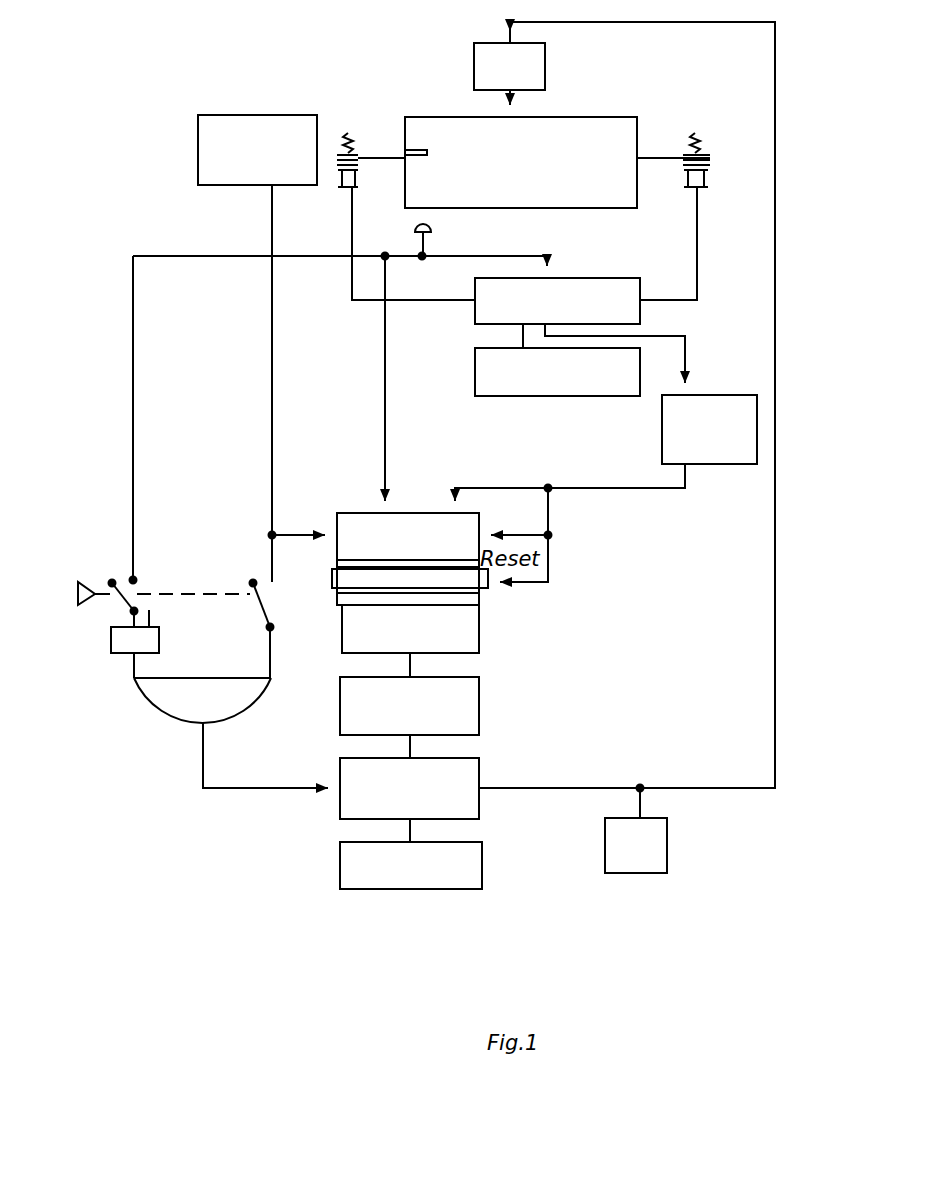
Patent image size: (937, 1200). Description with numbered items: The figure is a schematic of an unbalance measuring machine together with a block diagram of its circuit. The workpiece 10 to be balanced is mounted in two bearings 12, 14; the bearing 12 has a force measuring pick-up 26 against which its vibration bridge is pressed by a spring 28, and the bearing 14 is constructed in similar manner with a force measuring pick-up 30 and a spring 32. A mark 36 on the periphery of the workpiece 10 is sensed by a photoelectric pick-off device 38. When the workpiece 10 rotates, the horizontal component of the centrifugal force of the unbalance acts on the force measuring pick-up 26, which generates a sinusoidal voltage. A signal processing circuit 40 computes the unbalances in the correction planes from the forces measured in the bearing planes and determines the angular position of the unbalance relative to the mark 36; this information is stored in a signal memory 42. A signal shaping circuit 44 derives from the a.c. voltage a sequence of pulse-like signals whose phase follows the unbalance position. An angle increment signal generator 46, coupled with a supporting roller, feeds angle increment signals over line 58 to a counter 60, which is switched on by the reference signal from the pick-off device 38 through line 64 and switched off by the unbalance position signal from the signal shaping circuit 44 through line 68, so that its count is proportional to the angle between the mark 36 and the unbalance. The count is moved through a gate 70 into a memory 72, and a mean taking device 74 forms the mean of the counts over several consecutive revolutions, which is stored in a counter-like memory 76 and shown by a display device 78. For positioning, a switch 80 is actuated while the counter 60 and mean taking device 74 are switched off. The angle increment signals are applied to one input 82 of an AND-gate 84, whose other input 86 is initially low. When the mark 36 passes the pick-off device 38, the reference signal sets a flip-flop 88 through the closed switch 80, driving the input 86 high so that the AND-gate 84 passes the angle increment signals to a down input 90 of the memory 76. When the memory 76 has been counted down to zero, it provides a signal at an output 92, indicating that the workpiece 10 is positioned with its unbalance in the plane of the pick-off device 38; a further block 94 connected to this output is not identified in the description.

The workpiece 10 is at (578, 117).
The bearing 12 is at (363, 153).
The bearing 14 is at (687, 165).
The force measuring pick-up 26 is at (358, 178).
The spring 28 is at (343, 140).
The force measuring pick-up 30 is at (704, 178).
The spring 32 is at (688, 143).
The mark 36 is at (427, 152).
The pick-off device 38 is at (428, 222).
The signal processing circuit 40 is at (588, 279).
The signal memory 42 is at (545, 397).
The signal shaping circuit 44 is at (718, 395).
The angle increment signal generator 46 is at (262, 113).
The line 58 is at (276, 365).
The counter 60 is at (347, 512).
The line 64 is at (387, 363).
The line 68 is at (470, 486).
The gate 70 is at (481, 587).
The memory 72 is at (479, 645).
The mean taking device 74 is at (470, 715).
The memory 76 is at (480, 758).
The display device 78 is at (382, 890).
The switch 80 is at (90, 578).
The input 82 is at (268, 660).
The AND-gate 84 is at (183, 709).
The input 86 is at (134, 667).
The flip-flop 88 is at (155, 627).
The down input 90 is at (245, 800).
The output 92 is at (558, 795).
The output circuit 94 is at (667, 838).